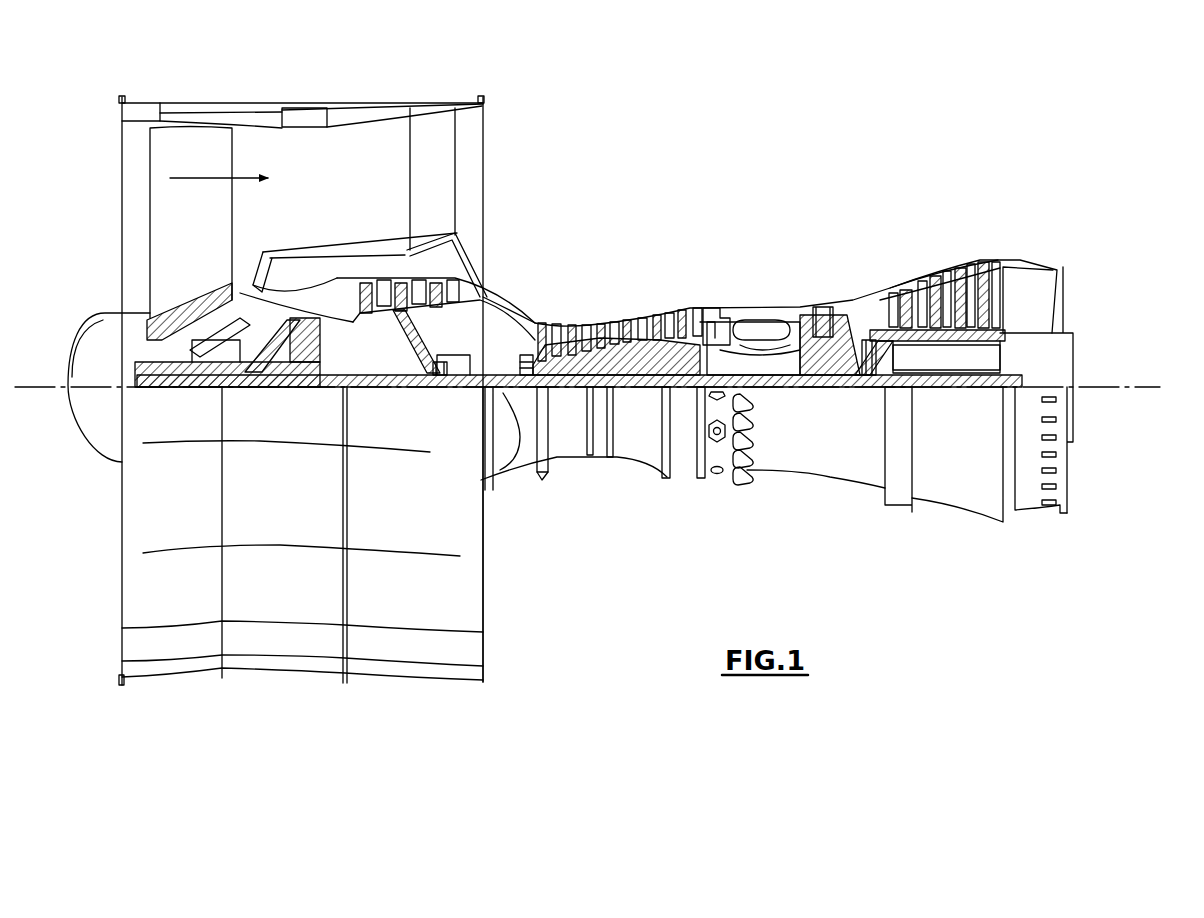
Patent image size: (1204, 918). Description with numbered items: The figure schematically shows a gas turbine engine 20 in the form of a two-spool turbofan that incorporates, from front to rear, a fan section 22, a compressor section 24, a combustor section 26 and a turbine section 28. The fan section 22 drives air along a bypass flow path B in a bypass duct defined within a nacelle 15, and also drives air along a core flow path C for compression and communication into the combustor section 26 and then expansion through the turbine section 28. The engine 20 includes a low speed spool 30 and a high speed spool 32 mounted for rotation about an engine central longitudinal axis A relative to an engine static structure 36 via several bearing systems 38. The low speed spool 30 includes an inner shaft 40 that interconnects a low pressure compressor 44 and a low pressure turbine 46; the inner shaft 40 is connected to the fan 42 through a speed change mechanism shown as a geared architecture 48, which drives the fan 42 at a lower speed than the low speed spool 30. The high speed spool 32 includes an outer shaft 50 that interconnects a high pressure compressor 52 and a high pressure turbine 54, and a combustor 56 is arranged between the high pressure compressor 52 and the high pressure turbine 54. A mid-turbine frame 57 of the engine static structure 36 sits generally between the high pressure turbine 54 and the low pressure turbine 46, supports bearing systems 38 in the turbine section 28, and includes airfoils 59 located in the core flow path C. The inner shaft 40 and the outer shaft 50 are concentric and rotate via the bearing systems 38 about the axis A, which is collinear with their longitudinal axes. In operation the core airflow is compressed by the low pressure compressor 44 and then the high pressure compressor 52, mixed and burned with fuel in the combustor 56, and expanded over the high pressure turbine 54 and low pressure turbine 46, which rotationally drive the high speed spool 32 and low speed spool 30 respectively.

The gas turbine engine 20 is at (760, 155).
The fan section 22 is at (232, 95).
The nacelle 15 is at (305, 103).
The fan 42 is at (206, 232).
The compressor section 24 is at (535, 295).
The combustor section 26 is at (755, 282).
The turbine section 28 is at (905, 245).
The low speed spool 30 is at (642, 392).
The high speed spool 32 is at (688, 337).
The engine static structure 36 is at (682, 477).
The bearing systems 38 is at (438, 388).
The inner shaft 40 is at (498, 390).
The low pressure compressor 44 is at (407, 297).
The low pressure turbine 46 is at (950, 280).
The geared architecture 48 is at (305, 372).
The outer shaft 50 is at (763, 385).
The high pressure compressor 52 is at (602, 322).
The high pressure turbine 54 is at (823, 307).
The combustor 56 is at (758, 325).
The mid-turbine frame 57 is at (863, 295).
The airfoils 59 is at (885, 345).
The engine central longitudinal axis A is at (1160, 387).
The bypass flow path B is at (205, 176).
The core flow path C is at (305, 283).